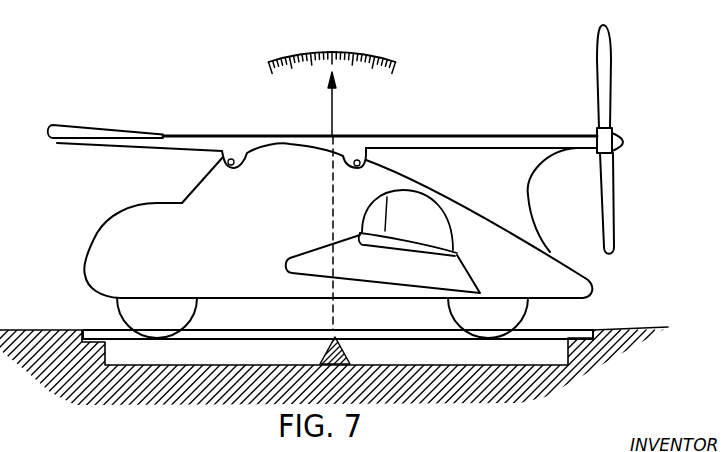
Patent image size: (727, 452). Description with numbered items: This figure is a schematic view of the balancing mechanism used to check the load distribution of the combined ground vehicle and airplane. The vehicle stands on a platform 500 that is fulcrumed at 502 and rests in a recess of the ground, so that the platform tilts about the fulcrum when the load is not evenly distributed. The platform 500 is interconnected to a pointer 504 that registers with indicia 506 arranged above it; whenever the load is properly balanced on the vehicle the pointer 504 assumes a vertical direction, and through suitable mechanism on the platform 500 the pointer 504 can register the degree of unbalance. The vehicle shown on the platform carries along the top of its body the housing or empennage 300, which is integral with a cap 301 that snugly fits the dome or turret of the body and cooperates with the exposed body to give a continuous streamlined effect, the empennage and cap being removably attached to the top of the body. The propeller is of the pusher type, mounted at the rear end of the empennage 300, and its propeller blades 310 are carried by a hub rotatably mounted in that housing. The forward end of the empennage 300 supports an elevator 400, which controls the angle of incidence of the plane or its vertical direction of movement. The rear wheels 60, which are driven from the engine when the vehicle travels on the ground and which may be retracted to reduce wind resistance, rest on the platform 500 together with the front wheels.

The elevator 400 is at (107, 120).
The empennage 300 is at (268, 135).
The cap 301 is at (245, 151).
The pointer 504 is at (336, 110).
The indicia 506 is at (339, 53).
The propeller blades 310 is at (604, 55).
The rear wheels 60 is at (196, 301).
The platform 500 is at (97, 329).
The fulcrum 502 is at (329, 343).